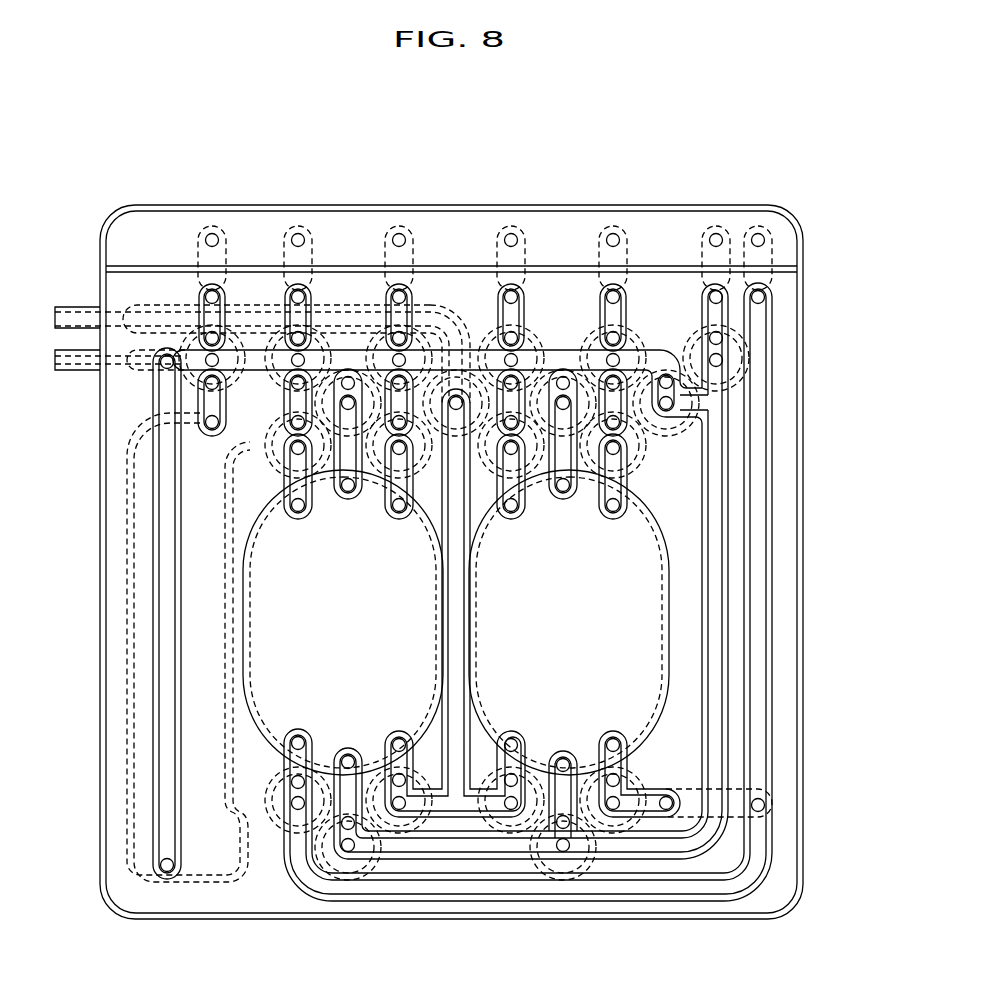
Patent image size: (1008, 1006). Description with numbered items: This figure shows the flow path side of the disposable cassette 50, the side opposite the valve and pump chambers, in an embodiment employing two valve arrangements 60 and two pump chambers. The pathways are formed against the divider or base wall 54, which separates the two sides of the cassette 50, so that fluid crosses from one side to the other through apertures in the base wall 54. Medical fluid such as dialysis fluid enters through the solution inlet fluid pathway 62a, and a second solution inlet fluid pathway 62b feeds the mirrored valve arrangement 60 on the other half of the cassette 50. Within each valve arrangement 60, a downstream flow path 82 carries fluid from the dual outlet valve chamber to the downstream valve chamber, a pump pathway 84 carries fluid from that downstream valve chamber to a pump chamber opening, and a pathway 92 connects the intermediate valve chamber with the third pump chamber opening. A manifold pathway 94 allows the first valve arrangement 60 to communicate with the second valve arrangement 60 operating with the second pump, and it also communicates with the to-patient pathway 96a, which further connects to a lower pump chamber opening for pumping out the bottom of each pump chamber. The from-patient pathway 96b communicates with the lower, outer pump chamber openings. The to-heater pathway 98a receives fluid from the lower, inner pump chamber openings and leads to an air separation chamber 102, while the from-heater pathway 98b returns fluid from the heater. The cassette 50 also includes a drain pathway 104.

The cassette 50 is at (810, 192).
The drain pathway 104 is at (188, 240).
The solution inlet fluid pathway 62a is at (280, 242).
The second solution inlet fluid pathway 62b is at (378, 240).
The valve arrangement 60 is at (272, 290).
The base wall 54 is at (377, 320).
The manifold pathway 94 is at (473, 345).
The to-patient pathway 96a is at (700, 240).
The from-patient pathway 96b is at (775, 250).
The to-heater pathway 98a is at (163, 500).
The from-heater pathway 98b is at (130, 297).
The air separation chamber 102 is at (208, 835).
The downstream flow path 82 is at (283, 404).
The pump pathway 84 is at (284, 483).
The pathway 92 is at (345, 460).